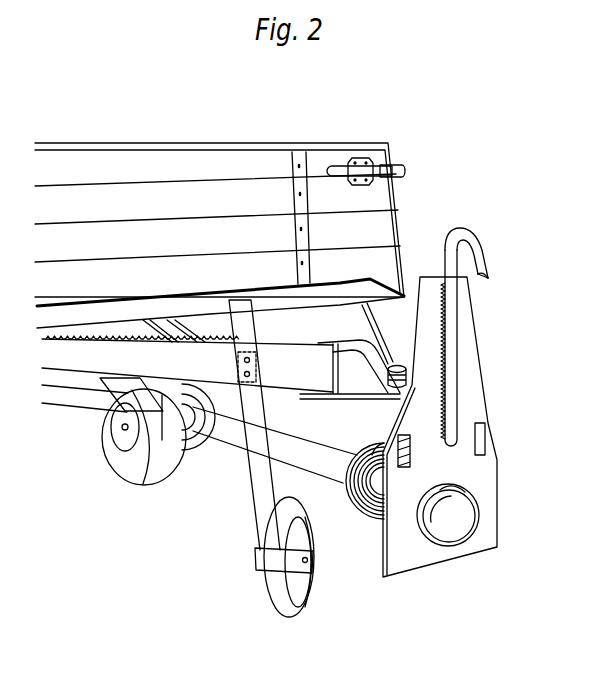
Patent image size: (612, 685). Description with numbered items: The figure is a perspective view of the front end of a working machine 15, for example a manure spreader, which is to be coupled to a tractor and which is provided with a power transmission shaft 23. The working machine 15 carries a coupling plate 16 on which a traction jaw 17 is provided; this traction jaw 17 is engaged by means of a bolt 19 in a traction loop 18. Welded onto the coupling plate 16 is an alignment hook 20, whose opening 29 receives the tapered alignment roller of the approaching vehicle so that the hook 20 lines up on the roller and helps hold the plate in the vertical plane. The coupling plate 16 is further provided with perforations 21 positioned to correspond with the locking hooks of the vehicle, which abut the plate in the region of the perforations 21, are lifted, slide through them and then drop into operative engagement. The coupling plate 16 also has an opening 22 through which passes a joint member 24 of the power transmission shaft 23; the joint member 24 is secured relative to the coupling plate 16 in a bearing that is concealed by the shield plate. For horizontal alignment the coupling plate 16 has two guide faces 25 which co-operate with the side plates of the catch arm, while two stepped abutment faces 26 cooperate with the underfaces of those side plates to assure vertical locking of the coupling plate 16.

The working machine 15 is at (200, 160).
The coupling plate 16 is at (470, 357).
The traction jaw 17 is at (385, 362).
The traction loop 18 is at (372, 402).
The bolt 19 is at (398, 365).
The alignment hook 20 is at (477, 250).
The perforations 21 is at (412, 458).
The opening 22 is at (447, 487).
The power transmission shaft 23 is at (238, 437).
The joint member 24 is at (462, 525).
The guide faces 25 is at (388, 466).
The stepped abutment faces 26 is at (367, 520).
The opening of the alignment hook 29 is at (463, 258).